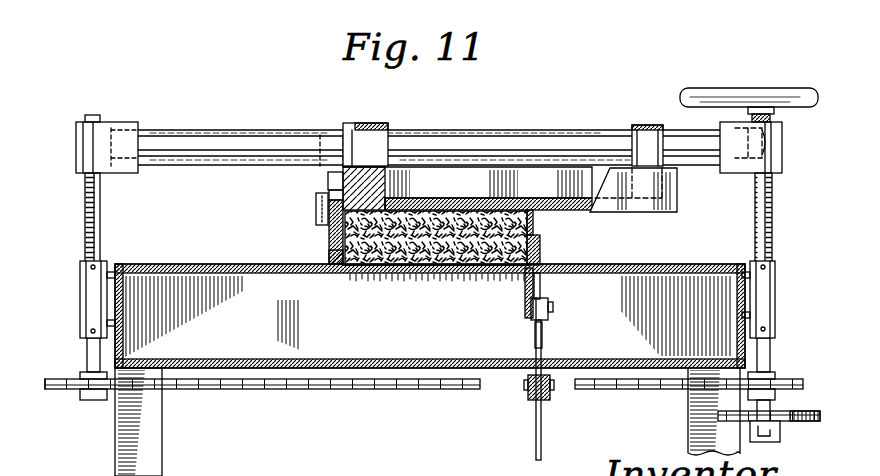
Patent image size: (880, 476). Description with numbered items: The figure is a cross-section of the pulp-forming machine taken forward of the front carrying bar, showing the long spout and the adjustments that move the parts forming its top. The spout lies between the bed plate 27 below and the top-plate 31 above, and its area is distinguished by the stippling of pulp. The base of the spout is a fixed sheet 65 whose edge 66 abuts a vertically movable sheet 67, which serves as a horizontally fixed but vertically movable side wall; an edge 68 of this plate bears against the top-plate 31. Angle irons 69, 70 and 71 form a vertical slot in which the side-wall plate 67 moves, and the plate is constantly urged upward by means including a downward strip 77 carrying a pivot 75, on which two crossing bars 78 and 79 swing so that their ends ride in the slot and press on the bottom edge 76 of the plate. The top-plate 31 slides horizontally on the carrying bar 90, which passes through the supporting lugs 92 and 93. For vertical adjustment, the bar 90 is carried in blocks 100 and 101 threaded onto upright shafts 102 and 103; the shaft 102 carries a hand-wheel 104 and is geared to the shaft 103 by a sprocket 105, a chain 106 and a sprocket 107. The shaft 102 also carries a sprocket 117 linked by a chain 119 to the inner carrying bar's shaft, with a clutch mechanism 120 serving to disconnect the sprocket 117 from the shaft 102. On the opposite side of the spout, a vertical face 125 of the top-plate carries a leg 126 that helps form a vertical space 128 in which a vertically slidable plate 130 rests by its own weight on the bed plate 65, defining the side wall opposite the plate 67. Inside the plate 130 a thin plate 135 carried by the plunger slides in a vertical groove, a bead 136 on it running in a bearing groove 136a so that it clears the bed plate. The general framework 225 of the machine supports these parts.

The bed plate 27 is at (181, 265).
The top-plate 31 is at (467, 188).
The sheet 65 is at (402, 271).
The edge 66 is at (497, 272).
The vertically movable sheet 67 is at (535, 219).
The edge 68 is at (537, 205).
The angle iron 69 is at (545, 246).
The angle iron 70 is at (524, 284).
The angle iron 71 is at (548, 285).
The pivot 75 is at (553, 388).
The bottom edge 76 is at (553, 306).
The downward strip 77 is at (548, 334).
The crossing bar 78 is at (543, 348).
The crossing bar 79 is at (534, 345).
The carrying bar 90 is at (495, 134).
The supporting lug 92 is at (373, 122).
The supporting lug 93 is at (642, 125).
The block 100 is at (779, 156).
The block 101 is at (108, 130).
The upright shaft 102 is at (770, 217).
The upright shaft 103 is at (100, 233).
The hand-wheel 104 is at (725, 93).
The sprocket 105 is at (813, 366).
The chain 106 is at (250, 391).
The sprocket 107 is at (69, 391).
The sprocket 117 is at (764, 446).
The chain 119 is at (786, 421).
The clutch mechanism 120 is at (773, 413).
The vertical face 125 is at (333, 194).
The leg or strap 126 is at (326, 180).
The vertical space 128 is at (318, 208).
The vertically slidable plate 130 is at (327, 239).
The thin plate 135 is at (301, 274).
The bead 136 is at (326, 252).
The bearing groove 136a is at (418, 298).
The general framework 225 is at (150, 449).